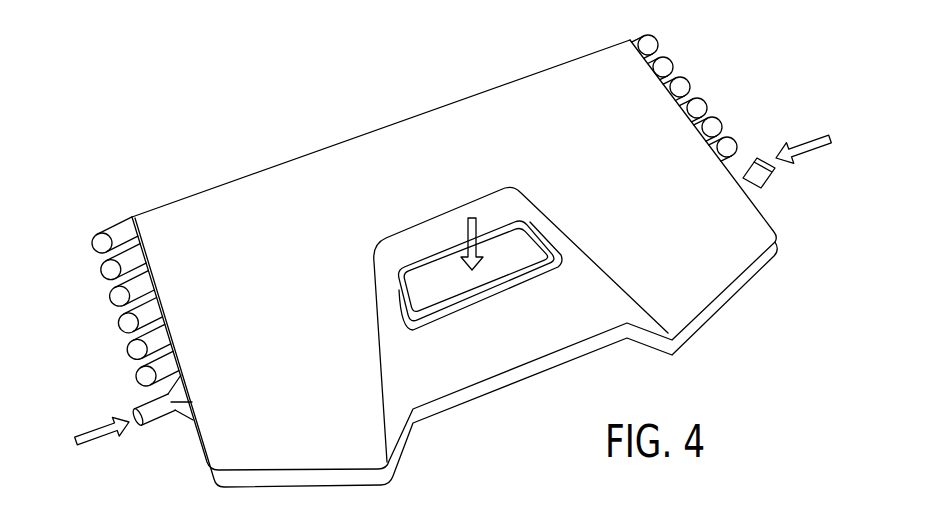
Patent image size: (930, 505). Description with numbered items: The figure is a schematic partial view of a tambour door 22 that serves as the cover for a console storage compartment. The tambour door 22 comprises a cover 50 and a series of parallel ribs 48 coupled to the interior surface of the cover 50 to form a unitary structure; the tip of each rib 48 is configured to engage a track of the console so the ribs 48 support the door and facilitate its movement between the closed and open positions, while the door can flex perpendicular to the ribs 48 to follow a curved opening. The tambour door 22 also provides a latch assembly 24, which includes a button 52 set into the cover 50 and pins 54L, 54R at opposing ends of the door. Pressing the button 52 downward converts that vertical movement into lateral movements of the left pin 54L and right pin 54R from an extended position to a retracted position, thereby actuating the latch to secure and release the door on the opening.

The tambour door 22 is at (367, 187).
The latch assembly 24 is at (542, 327).
The parallel ribs 48 is at (118, 323).
The cover 50 is at (268, 183).
The button 52 is at (476, 278).
The left pin 54L is at (156, 414).
The right pin 54R is at (755, 170).